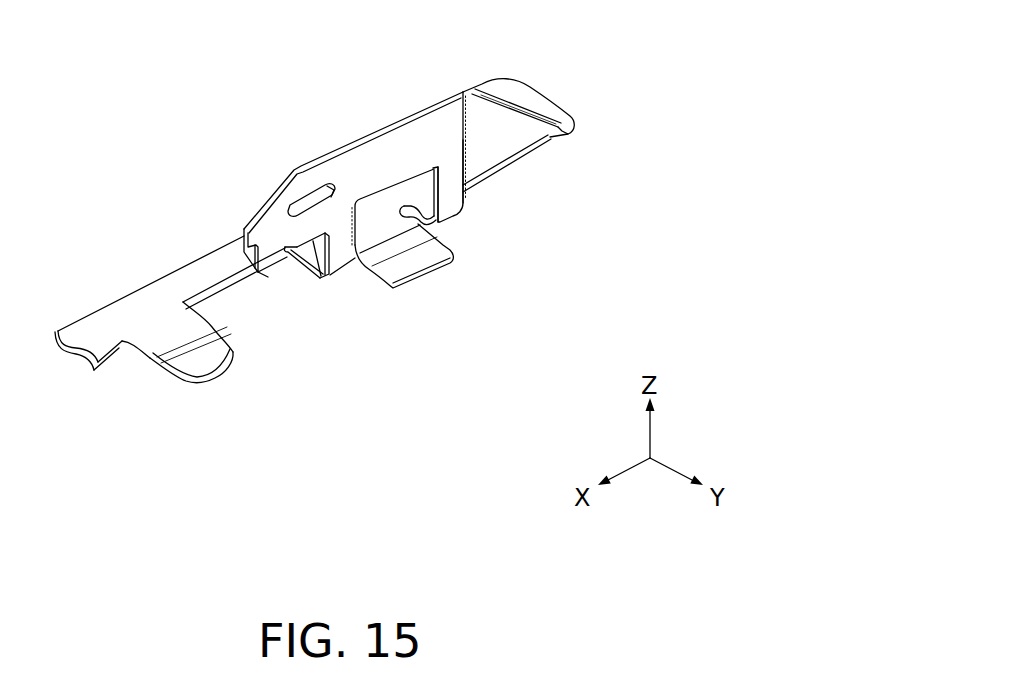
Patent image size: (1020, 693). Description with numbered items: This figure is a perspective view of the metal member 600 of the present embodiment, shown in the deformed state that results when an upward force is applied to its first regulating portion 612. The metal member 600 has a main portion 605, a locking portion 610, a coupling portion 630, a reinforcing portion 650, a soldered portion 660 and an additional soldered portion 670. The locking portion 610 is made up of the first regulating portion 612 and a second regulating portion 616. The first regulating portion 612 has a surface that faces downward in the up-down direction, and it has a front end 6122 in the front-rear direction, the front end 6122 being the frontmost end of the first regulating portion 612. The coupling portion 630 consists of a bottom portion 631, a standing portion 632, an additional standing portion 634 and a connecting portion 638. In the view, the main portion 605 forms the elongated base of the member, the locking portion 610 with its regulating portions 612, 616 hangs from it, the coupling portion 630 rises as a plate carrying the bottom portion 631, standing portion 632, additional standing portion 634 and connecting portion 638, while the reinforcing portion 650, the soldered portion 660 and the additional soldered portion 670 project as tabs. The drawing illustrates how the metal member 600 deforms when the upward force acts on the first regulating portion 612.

The metal member 600 is at (121, 77).
The main portion 605 is at (233, 245).
The locking portion 610 is at (311, 324).
The first regulating portion 612 is at (320, 272).
The second regulating portion 616 is at (292, 266).
The front end 6122 is at (280, 257).
The coupling portion 630 is at (417, 198).
The bottom portion 631 is at (387, 205).
The standing portion 632 is at (350, 262).
The additional standing portion 634 is at (440, 192).
The connecting portion 638 is at (375, 158).
The reinforcing portion 650 is at (420, 254).
The soldered portion 660 is at (205, 360).
The additional soldered portion 670 is at (540, 100).